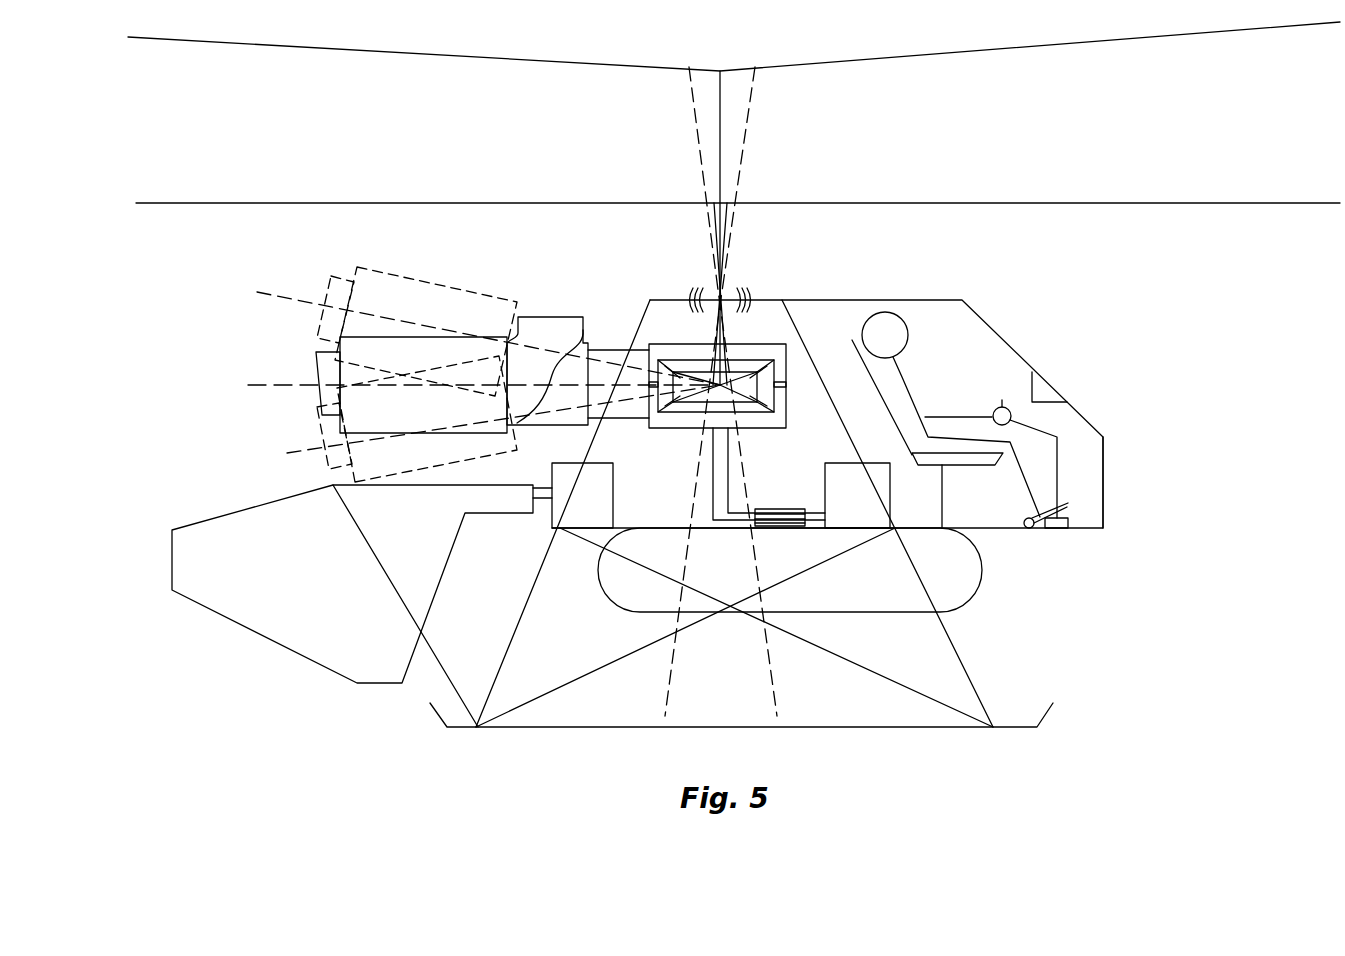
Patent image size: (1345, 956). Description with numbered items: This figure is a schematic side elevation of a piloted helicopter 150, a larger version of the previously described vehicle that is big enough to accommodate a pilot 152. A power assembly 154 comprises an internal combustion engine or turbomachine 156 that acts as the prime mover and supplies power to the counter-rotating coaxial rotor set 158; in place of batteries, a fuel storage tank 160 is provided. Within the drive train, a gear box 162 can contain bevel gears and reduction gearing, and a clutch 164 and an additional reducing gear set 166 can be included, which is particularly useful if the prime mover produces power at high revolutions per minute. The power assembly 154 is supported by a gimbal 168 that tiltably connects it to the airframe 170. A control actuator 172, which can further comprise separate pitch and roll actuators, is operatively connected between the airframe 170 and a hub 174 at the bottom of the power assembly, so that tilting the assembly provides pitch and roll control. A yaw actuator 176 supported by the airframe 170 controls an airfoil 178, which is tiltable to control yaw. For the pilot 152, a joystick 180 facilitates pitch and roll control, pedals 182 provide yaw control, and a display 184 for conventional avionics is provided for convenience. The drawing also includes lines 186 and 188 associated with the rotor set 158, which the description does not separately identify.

The helicopter 150 is at (1200, 345).
The pilot 152 is at (905, 375).
The power assembly 154 is at (559, 300).
The internal combustion engine or turbomachine 156 is at (400, 337).
The counter-rotating coaxial rotor set 158 is at (845, 100).
The fuel storage tank 160 is at (975, 597).
The gear box 162 is at (757, 428).
The clutch 164 is at (632, 422).
The additional reducing gear set 166 is at (593, 343).
The gimbal 168 is at (748, 288).
The airframe 170 is at (663, 298).
The control actuator 172 is at (857, 495).
The hub 174 is at (730, 492).
The yaw actuator 176 is at (574, 495).
The airfoil 178 is at (352, 606).
The joystick 180 is at (1075, 447).
The pedals 182 is at (1072, 505).
The display 184 is at (1048, 385).
The laser beam 186 is at (720, 129).
The beam 188 is at (730, 232).